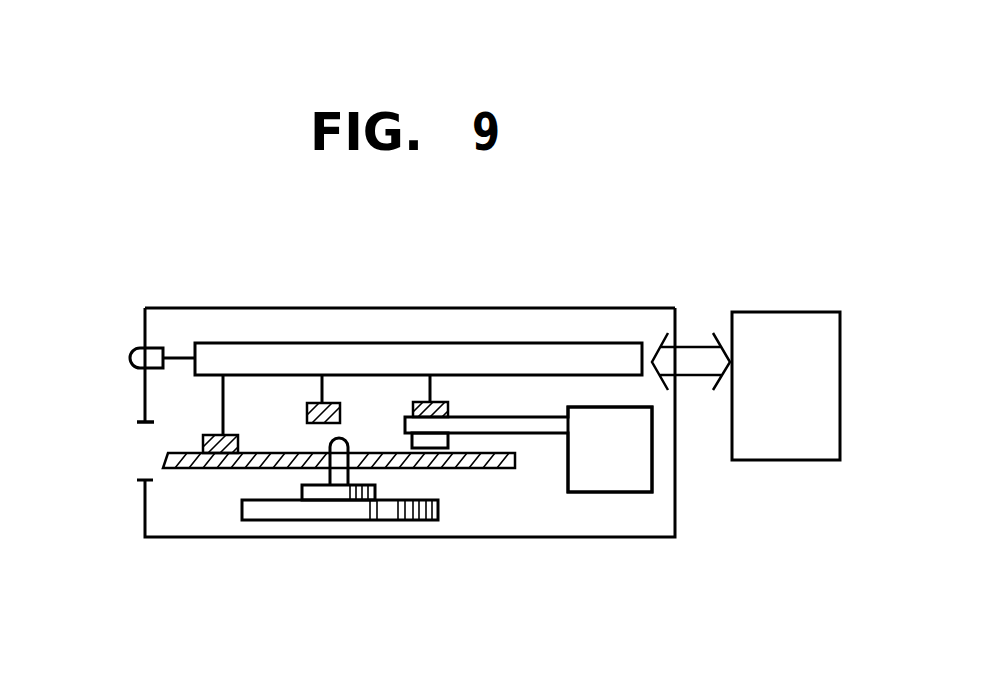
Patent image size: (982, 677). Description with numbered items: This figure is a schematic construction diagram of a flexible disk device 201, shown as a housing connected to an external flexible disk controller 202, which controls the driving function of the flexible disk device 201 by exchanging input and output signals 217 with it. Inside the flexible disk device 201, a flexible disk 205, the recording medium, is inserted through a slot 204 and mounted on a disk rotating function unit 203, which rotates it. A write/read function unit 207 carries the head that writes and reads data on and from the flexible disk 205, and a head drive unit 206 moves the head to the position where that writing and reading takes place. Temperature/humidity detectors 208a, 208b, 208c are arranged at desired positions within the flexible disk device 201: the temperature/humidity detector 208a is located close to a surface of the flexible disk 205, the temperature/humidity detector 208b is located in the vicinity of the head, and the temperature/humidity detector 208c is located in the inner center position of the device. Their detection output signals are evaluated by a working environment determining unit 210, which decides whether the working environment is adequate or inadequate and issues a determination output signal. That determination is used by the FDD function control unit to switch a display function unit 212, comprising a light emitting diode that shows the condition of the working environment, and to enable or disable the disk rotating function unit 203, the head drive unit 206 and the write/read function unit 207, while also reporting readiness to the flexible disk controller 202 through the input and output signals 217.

The flexible disk device 201 is at (315, 308).
The flexible disk controller 202 is at (752, 312).
The disk rotating function unit 203 is at (367, 520).
The slot 204 is at (145, 435).
The flexible disk 205 is at (188, 470).
The head drive unit 206 is at (607, 492).
The write/read function unit 207 is at (449, 436).
The temperature/humidity detector 208a is at (237, 433).
The temperature/humidity detector 208b is at (449, 405).
The temperature/humidity detector 208c is at (338, 405).
The working environment determining unit 210 is at (470, 308).
The display function unit 212 is at (140, 348).
The input and output signals 217 is at (698, 377).